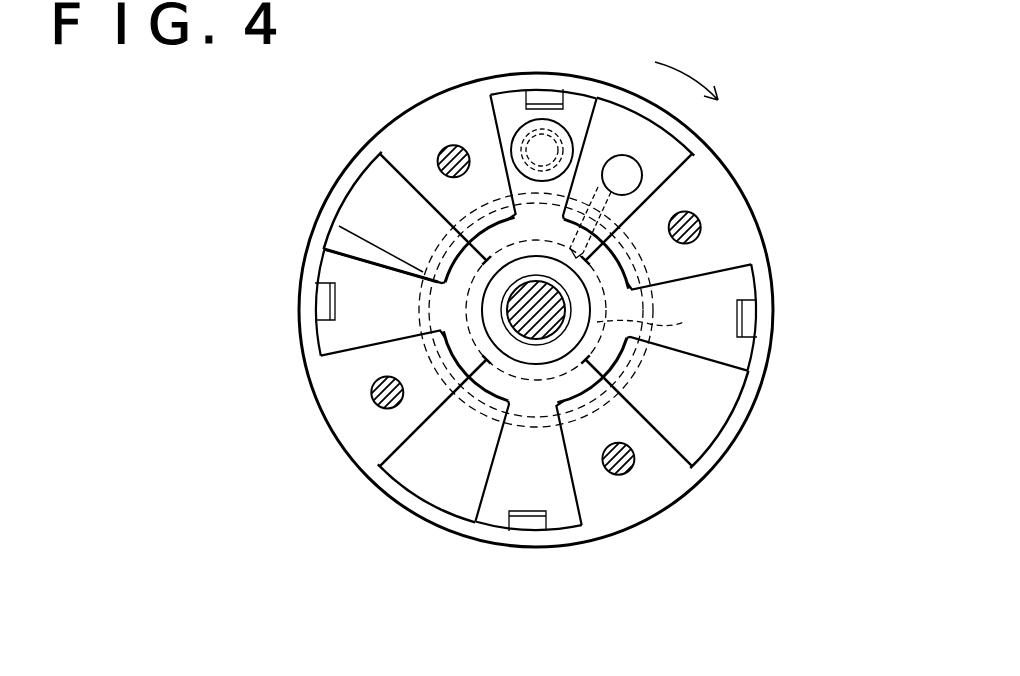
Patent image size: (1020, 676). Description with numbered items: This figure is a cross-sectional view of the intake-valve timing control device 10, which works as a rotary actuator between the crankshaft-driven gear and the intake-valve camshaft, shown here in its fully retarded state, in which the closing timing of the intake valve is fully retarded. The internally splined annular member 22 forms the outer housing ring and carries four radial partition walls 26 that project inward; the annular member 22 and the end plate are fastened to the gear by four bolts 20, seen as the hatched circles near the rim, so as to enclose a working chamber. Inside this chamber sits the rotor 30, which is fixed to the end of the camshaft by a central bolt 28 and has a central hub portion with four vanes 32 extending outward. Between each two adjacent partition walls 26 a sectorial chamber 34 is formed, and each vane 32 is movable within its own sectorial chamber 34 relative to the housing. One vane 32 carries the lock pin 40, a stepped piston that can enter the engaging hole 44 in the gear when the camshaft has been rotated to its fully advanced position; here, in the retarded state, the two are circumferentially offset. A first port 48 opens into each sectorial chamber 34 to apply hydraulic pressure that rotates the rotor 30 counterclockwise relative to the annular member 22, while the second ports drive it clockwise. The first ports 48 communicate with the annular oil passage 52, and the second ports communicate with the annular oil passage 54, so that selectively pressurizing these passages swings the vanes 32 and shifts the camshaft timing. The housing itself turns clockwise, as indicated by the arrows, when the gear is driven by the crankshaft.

The intake-valve timing control device 10 is at (758, 77).
The bolts 20 is at (445, 152).
The internally splined annular member 22 is at (356, 158).
The radial partition walls 26 is at (487, 170).
The bolt 28 is at (535, 336).
The rotor 30 is at (345, 230).
The vanes 32 is at (507, 100).
The sectorial chamber 34 is at (675, 145).
The lock pin 40 is at (570, 108).
The engaging hole 44 is at (622, 165).
The first port 48 is at (636, 205).
The annular oil passage 52 is at (663, 325).
The annular oil passage 54 is at (421, 288).